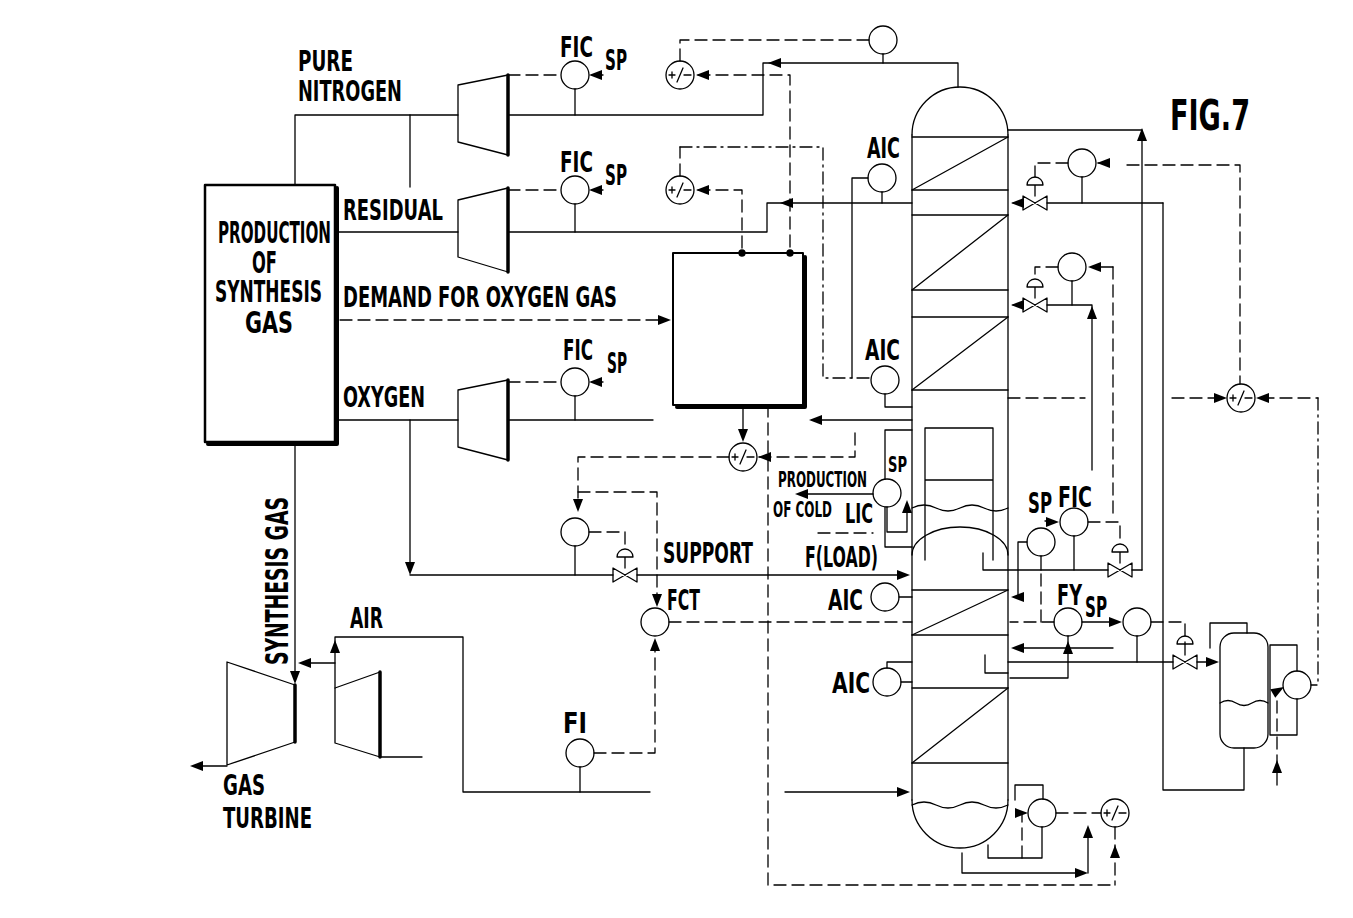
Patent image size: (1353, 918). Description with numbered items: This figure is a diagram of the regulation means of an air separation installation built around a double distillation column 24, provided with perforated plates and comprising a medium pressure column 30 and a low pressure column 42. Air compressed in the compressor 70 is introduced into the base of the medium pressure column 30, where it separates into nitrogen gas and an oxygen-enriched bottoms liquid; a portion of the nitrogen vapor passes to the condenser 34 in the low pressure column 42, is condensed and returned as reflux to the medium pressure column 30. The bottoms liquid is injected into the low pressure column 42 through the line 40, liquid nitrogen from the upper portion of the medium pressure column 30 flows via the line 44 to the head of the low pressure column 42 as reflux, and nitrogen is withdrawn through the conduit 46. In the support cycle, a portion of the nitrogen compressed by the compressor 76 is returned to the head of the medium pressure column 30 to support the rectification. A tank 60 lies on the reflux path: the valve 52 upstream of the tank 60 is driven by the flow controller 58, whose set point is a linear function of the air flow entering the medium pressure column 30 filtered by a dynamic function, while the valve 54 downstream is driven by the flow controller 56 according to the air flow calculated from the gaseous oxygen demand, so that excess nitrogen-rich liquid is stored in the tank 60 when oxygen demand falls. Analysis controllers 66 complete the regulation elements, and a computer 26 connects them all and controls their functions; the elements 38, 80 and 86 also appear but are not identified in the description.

The double distillation column 24 is at (1012, 100).
The computer 26 is at (673, 300).
The medium pressure column 30 is at (912, 706).
The condenser 34 is at (953, 410).
The control valve 38 is at (1033, 312).
The line 40 is at (962, 866).
The low pressure column 42 is at (1033, 252).
The line 44 is at (1163, 473).
The conduit 46 is at (846, 66).
The valve 52 is at (1185, 673).
The valve 54 is at (1028, 195).
The flow controller 56 is at (1093, 176).
The flow controller 58 is at (1150, 613).
The tank 60 is at (1222, 712).
The analysis controller 66 is at (870, 54).
The compressor 70 is at (382, 700).
The compressor 76 is at (510, 140).
The oxygen compressor 80 is at (460, 430).
The control valve 86 is at (625, 583).